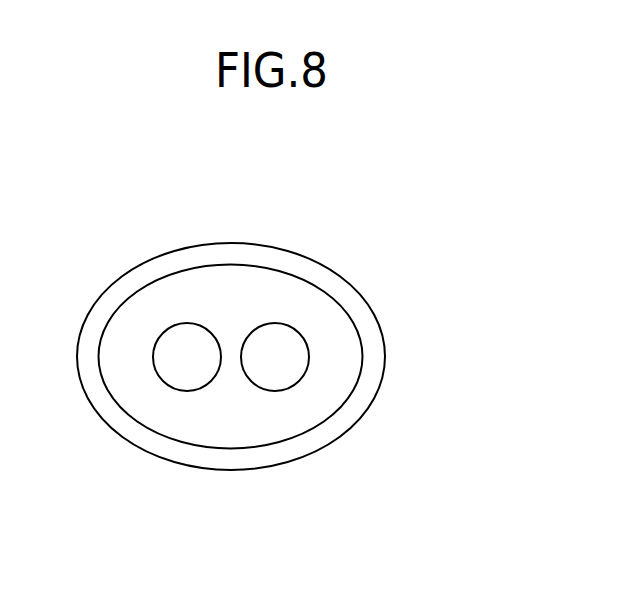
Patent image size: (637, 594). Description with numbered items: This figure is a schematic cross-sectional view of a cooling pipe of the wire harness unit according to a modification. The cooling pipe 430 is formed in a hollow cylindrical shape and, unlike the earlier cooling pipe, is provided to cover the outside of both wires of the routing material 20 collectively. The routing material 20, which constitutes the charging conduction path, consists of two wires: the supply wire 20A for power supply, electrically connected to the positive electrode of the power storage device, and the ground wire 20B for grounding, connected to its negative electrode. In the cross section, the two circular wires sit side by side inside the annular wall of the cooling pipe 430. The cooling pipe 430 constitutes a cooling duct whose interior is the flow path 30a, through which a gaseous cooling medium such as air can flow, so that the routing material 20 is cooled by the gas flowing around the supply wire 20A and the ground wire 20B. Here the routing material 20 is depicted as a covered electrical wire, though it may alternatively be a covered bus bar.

The cooling pipe 430 is at (383, 313).
The flow path 30a is at (320, 370).
The supply wire 20A is at (188, 323).
The ground wire 20B is at (273, 323).
The routing material 20 is at (347, 182).